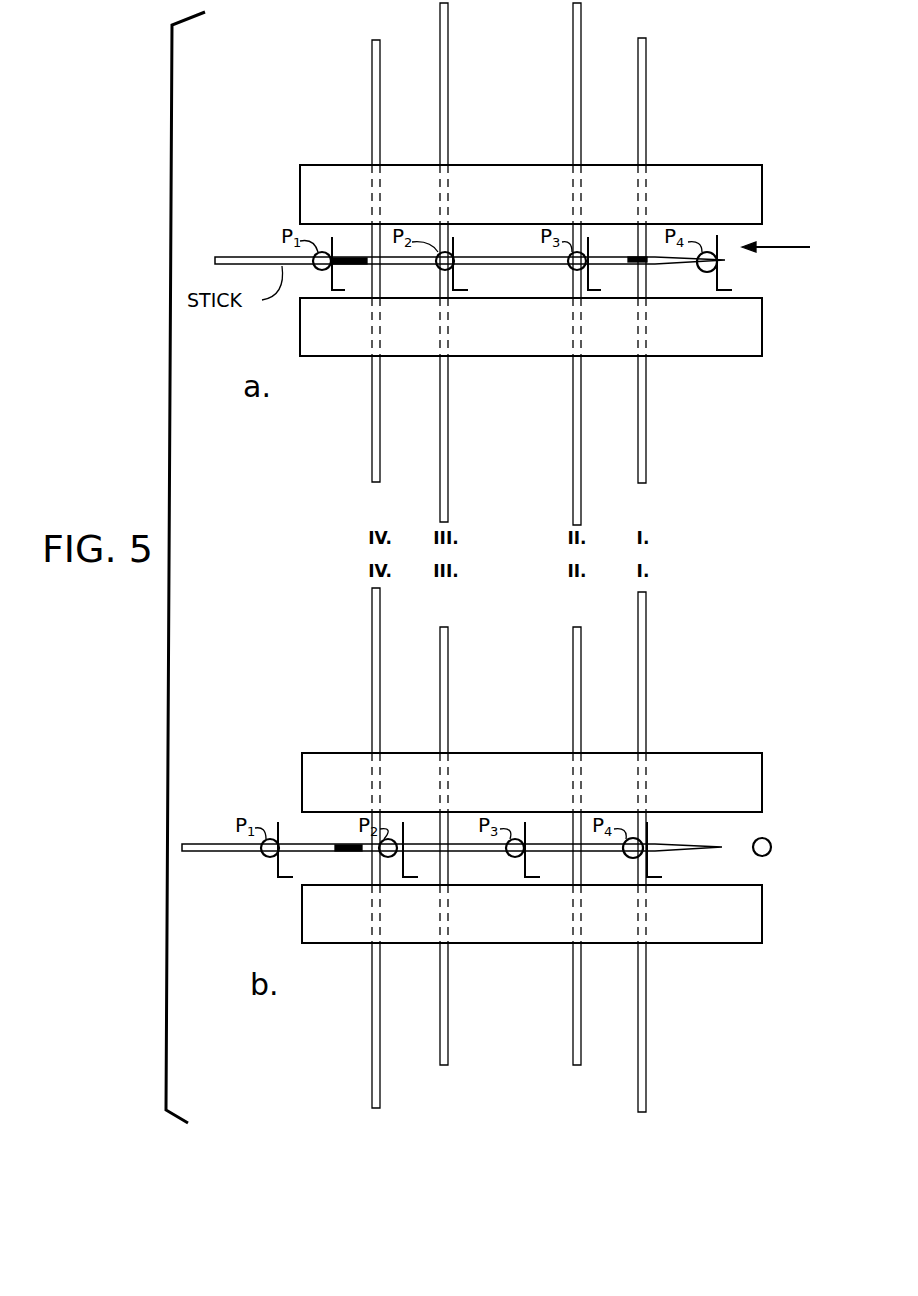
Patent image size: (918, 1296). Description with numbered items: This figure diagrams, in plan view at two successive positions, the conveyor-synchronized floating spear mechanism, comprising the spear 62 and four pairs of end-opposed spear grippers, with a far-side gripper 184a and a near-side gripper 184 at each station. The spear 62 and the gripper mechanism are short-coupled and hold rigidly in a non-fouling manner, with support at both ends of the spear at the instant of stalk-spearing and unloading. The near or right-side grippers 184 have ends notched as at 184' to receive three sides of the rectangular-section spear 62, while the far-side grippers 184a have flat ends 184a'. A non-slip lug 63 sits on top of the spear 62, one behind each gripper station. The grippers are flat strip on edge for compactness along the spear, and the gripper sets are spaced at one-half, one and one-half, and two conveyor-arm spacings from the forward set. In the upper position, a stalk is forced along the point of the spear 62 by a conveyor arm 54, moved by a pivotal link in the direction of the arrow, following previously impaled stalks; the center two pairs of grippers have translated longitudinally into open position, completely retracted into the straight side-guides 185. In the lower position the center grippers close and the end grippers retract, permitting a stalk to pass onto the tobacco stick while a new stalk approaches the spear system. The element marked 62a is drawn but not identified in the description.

The near side spear gripper 184 is at (411, 261).
The far side spear gripper 184a is at (341, 102).
The notched end 184' is at (448, 283).
The flat end 184a' is at (486, 245).
The straight side-guide 185 is at (300, 193).
The spear 62 is at (528, 257).
The stick marker 62a is at (350, 257).
The non-slip lug 63 is at (629, 257).
The conveyor arm 54 is at (706, 272).